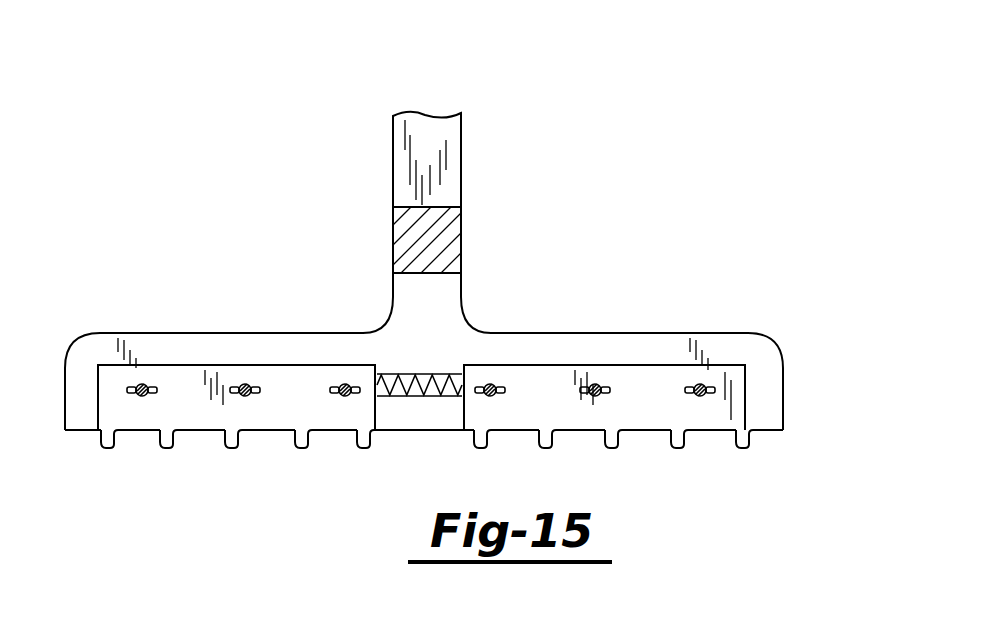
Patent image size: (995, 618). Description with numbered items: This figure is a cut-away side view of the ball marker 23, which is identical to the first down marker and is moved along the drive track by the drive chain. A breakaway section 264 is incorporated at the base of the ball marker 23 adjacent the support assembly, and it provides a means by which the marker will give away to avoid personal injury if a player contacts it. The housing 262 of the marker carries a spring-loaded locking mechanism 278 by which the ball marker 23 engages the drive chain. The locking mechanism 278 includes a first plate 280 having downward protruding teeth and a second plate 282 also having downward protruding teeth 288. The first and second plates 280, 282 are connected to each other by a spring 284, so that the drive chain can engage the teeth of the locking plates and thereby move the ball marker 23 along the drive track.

The ball marker 23 is at (420, 303).
The housing body 262 is at (672, 333).
The breakaway section 264 is at (453, 228).
The spring-loaded locking mechanism 278 is at (338, 447).
The first plate 280 is at (213, 420).
The second plate 282 is at (583, 432).
The spring 284 is at (420, 396).
The downward protruding teeth 288 is at (165, 452).